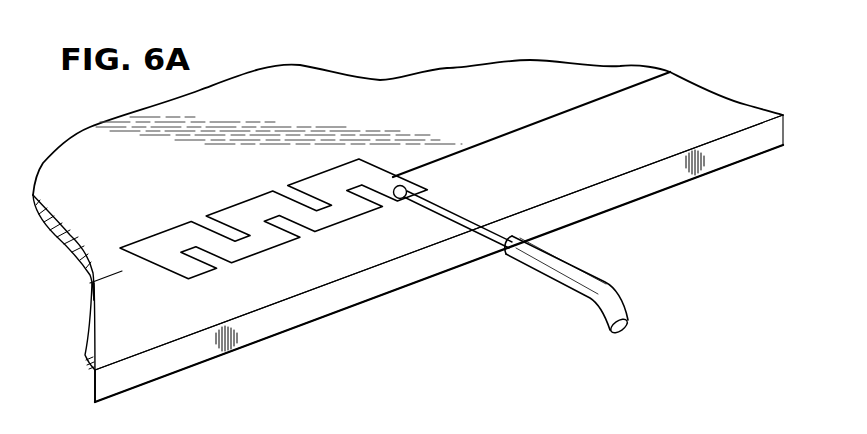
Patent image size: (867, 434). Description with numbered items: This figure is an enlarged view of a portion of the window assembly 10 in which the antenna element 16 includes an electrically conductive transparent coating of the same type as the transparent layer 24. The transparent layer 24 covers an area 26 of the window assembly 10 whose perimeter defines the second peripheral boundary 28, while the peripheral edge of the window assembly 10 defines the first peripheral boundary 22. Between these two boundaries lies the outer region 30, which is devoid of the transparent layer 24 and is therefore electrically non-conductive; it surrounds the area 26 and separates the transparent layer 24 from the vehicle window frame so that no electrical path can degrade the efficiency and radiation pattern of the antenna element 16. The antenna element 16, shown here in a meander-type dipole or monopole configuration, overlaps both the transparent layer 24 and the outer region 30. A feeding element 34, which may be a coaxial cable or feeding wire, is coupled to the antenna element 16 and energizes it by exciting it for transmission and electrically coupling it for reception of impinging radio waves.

The window assembly 10 is at (425, 52).
The antenna element 16 is at (258, 200).
The first peripheral boundary 22 is at (160, 347).
The transparent layer 24 is at (110, 226).
The area 26 is at (95, 152).
The second peripheral boundary 28 is at (120, 283).
The outer region 30 is at (710, 118).
The feeding element 34 is at (595, 292).